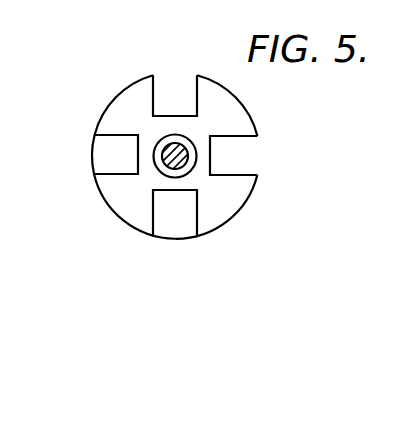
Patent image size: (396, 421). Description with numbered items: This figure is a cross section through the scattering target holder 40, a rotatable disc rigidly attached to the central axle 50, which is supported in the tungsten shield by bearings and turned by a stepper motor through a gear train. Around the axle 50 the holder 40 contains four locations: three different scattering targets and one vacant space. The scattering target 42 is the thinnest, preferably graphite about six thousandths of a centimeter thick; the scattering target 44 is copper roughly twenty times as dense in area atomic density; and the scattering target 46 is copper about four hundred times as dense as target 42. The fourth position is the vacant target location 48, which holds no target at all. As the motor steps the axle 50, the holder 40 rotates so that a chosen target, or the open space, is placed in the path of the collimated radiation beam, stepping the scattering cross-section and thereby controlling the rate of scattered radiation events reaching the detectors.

The scattering target holder 40 is at (110, 95).
The scattering target 42 is at (170, 88).
The scattering target 44 is at (105, 148).
The scattering target 46 is at (183, 223).
The vacant target location 48 is at (232, 145).
The axle 50 is at (183, 158).